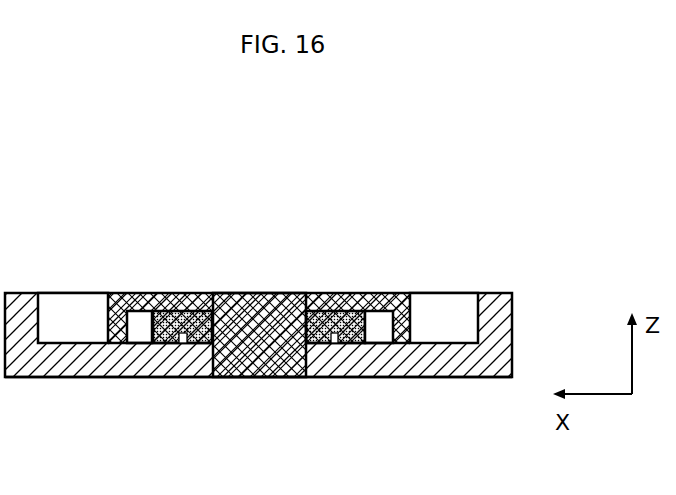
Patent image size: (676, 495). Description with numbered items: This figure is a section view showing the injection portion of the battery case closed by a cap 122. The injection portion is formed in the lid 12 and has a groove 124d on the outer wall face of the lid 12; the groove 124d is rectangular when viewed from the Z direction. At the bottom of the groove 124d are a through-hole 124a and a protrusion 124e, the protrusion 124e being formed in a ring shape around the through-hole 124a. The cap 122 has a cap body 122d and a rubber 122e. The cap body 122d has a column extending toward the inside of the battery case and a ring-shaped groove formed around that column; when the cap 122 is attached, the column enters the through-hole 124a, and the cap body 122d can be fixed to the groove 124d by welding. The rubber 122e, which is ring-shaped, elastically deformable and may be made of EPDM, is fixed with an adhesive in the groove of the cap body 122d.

The lid 12 is at (528, 268).
The cap 122 is at (259, 268).
The cap body 122d is at (257, 286).
The rubber 122e is at (363, 208).
The groove 124d is at (70, 313).
The protrusion 124e is at (183, 340).
The through-hole 124a is at (308, 365).